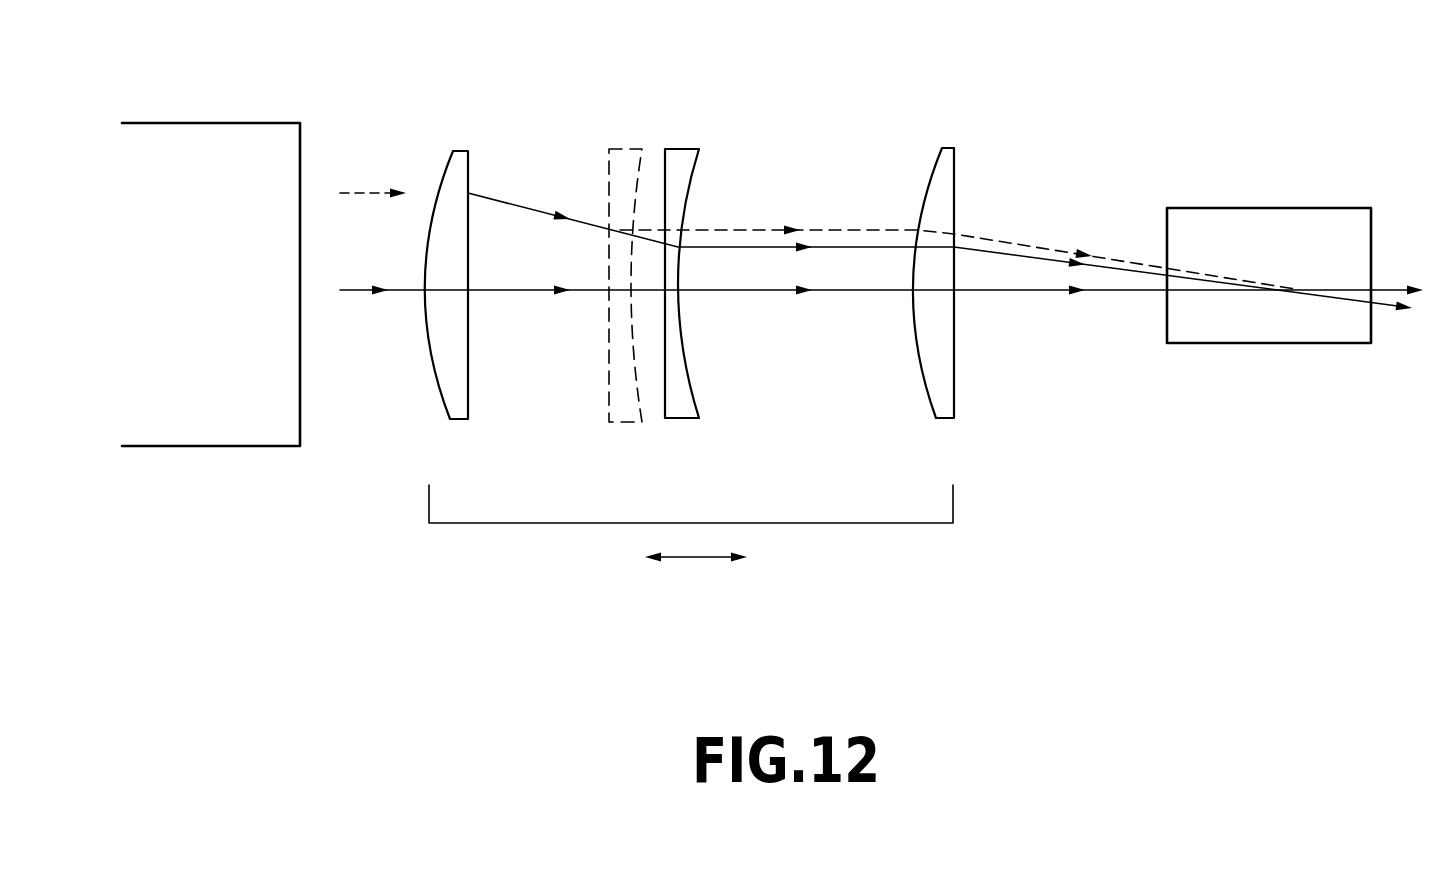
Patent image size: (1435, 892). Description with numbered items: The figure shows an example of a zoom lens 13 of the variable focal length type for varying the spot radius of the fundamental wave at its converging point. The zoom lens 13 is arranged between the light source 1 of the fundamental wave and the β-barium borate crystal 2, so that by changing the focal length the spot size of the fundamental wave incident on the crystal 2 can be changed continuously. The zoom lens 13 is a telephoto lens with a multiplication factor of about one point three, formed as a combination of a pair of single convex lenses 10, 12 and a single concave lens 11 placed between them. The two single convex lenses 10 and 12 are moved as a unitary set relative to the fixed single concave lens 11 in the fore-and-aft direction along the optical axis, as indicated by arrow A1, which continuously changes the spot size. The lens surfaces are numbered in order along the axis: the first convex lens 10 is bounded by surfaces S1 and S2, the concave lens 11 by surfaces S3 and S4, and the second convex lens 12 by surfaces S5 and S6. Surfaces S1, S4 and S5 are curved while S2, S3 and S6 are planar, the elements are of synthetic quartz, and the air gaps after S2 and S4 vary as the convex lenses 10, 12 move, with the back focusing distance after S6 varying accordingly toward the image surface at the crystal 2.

The light source 1 is at (204, 116).
The β-barium borate crystal 2 is at (1249, 200).
The single convex lens 10 is at (460, 420).
The single concave lens 11 is at (678, 420).
The single convex lens 12 is at (945, 420).
The zoom lens 13 is at (951, 94).
The lens surface S1 is at (443, 173).
The lens surface S2 is at (469, 178).
The lens surface S3 is at (663, 160).
The lens surface S4 is at (700, 186).
The lens surface S5 is at (927, 181).
The lens surface S6 is at (955, 186).
The arrow A1 is at (696, 575).